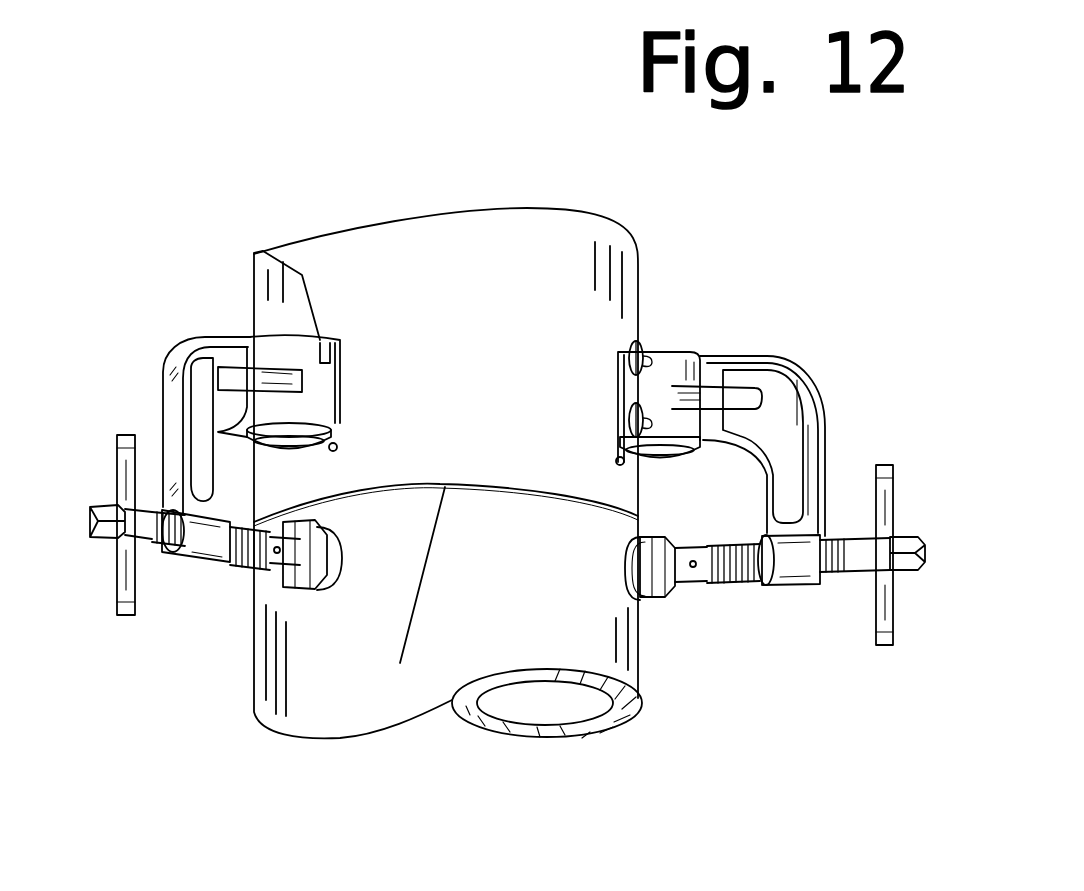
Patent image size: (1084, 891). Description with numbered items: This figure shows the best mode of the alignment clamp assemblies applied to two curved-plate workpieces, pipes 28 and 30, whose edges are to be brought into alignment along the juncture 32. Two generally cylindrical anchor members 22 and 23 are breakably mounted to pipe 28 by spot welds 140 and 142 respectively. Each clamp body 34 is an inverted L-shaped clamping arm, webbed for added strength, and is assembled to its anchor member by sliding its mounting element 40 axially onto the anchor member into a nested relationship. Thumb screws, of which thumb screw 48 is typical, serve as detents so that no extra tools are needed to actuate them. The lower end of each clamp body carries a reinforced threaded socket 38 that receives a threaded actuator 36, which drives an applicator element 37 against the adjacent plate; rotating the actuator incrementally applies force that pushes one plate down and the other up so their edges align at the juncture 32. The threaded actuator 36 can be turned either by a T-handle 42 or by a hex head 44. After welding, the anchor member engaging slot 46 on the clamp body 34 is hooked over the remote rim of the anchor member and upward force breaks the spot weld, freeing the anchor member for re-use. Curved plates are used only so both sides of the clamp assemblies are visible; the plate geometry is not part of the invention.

The pipe 28 is at (425, 245).
The anchor member engaging slot 46 is at (252, 256).
The juncture 32 is at (400, 663).
The pipe 30 is at (640, 693).
The clamp body member 34 is at (180, 398).
The mounting element 40 is at (300, 360).
The anchor member 23 is at (305, 428).
The spot weld 142 is at (337, 447).
The anchor member 22 is at (657, 440).
The thumb screw 48 is at (628, 355).
The spot weld 140 is at (616, 460).
The threaded socket 38 is at (800, 582).
The threaded actuator 36 is at (722, 545).
The applicator element 37 is at (656, 590).
The T-handle 42 is at (876, 452).
The hex head 44 is at (910, 575).